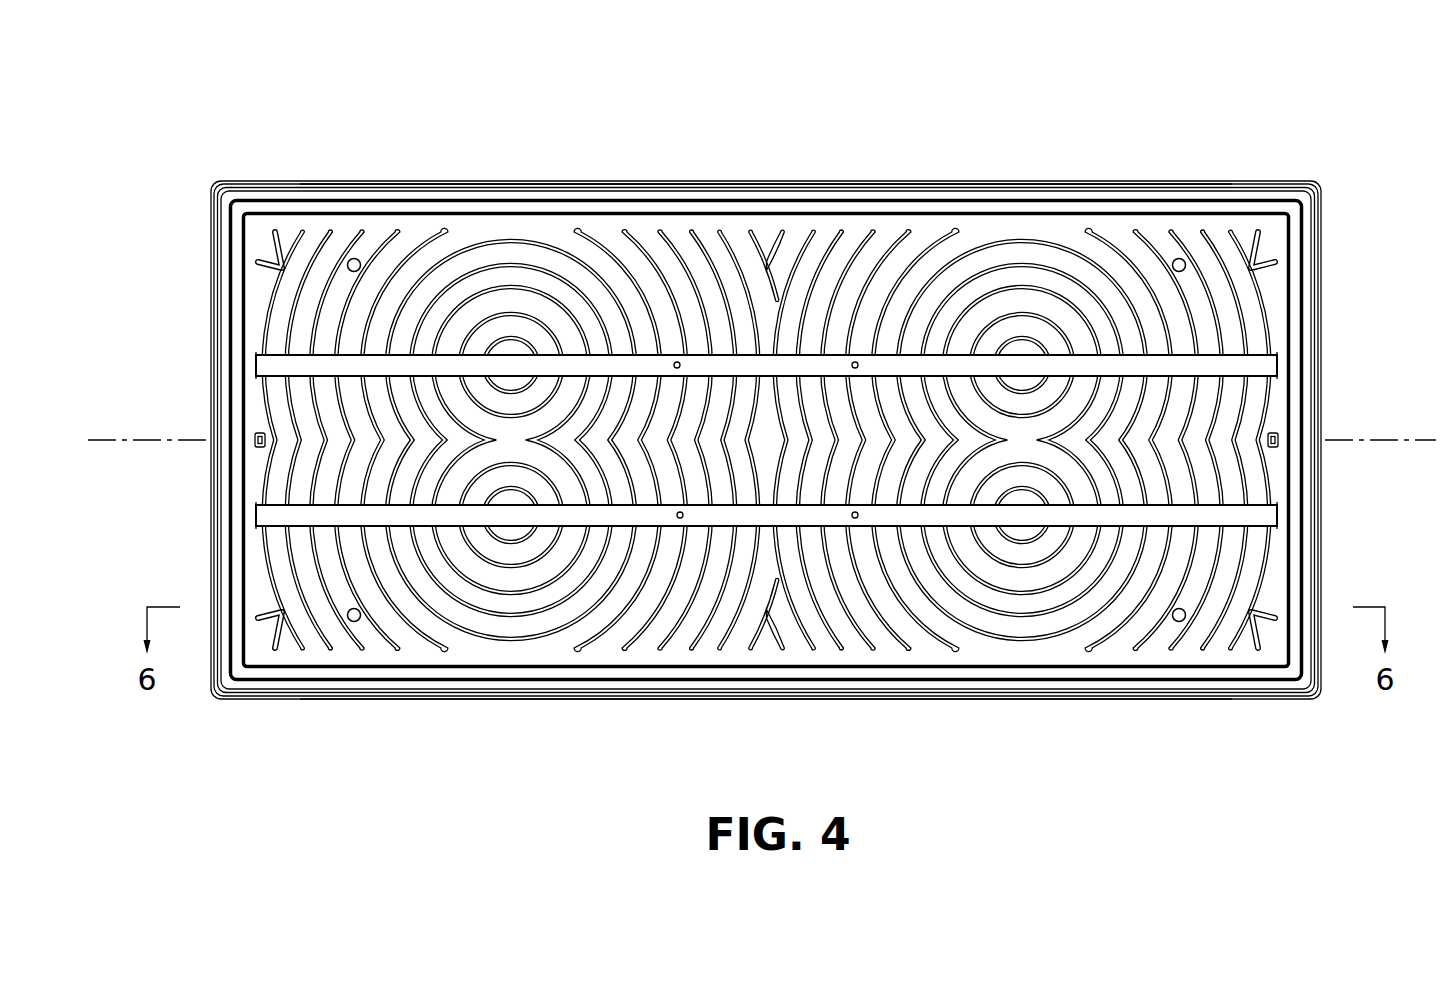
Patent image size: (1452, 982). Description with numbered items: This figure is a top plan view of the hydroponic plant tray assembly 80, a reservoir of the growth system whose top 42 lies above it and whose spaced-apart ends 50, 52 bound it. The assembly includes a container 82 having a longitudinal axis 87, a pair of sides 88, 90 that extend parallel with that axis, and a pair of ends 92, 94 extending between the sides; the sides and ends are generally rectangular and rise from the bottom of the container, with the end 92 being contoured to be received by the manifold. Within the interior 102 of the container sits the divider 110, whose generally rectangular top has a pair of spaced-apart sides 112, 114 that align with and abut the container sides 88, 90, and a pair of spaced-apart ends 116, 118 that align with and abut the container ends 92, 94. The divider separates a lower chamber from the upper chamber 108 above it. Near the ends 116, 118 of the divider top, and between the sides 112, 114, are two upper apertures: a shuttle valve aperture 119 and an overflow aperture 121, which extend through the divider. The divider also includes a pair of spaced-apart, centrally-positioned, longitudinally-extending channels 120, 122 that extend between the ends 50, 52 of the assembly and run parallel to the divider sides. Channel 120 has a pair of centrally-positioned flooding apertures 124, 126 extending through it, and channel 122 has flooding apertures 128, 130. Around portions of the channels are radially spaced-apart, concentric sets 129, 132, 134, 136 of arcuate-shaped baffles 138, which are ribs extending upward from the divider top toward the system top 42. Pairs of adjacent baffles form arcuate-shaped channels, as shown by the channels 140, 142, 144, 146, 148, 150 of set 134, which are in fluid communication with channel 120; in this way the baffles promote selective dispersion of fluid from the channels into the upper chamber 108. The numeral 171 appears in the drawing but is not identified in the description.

The top 42 is at (1246, 181).
The end 50 is at (152, 382).
The end 52 is at (1374, 508).
The plant tray assembly 80 is at (1342, 146).
The container 82 is at (1323, 213).
The longitudinal axis 87 is at (100, 442).
The side 88 is at (627, 702).
The side 90 is at (770, 185).
The end 92 is at (206, 360).
The end 94 is at (1323, 404).
The interior 102 is at (1011, 236).
The upper chamber 108 is at (400, 233).
The divider 110 is at (664, 456).
The side 112 is at (420, 668).
The side 114 is at (483, 212).
The end 116 is at (240, 427).
The end 118 is at (1292, 337).
The shuttle valve aperture 119 is at (252, 442).
The channel 120 is at (307, 363).
The overflow aperture 121 is at (1275, 445).
The channel 122 is at (270, 515).
The flooding aperture 124 is at (677, 362).
The flooding aperture 126 is at (855, 362).
The flooding aperture 128 is at (681, 518).
The set of baffles 129 is at (538, 246).
The flooding aperture 130 is at (856, 518).
The set of baffles 132 is at (520, 638).
The set of baffles 134 is at (1105, 211).
The set of baffles 136 is at (1042, 645).
The arcuate-shaped baffle 138 is at (468, 243).
The arcuate-shaped channel 140 is at (1018, 348).
The arcuate-shaped channel 142 is at (992, 328).
The arcuate-shaped channel 144 is at (978, 317).
The arcuate-shaped channel 146 is at (1025, 277).
The arcuate-shaped channel 148 is at (1043, 253).
The arcuate-shaped channel 150 is at (1072, 232).
The chevron channel 171 is at (880, 445).